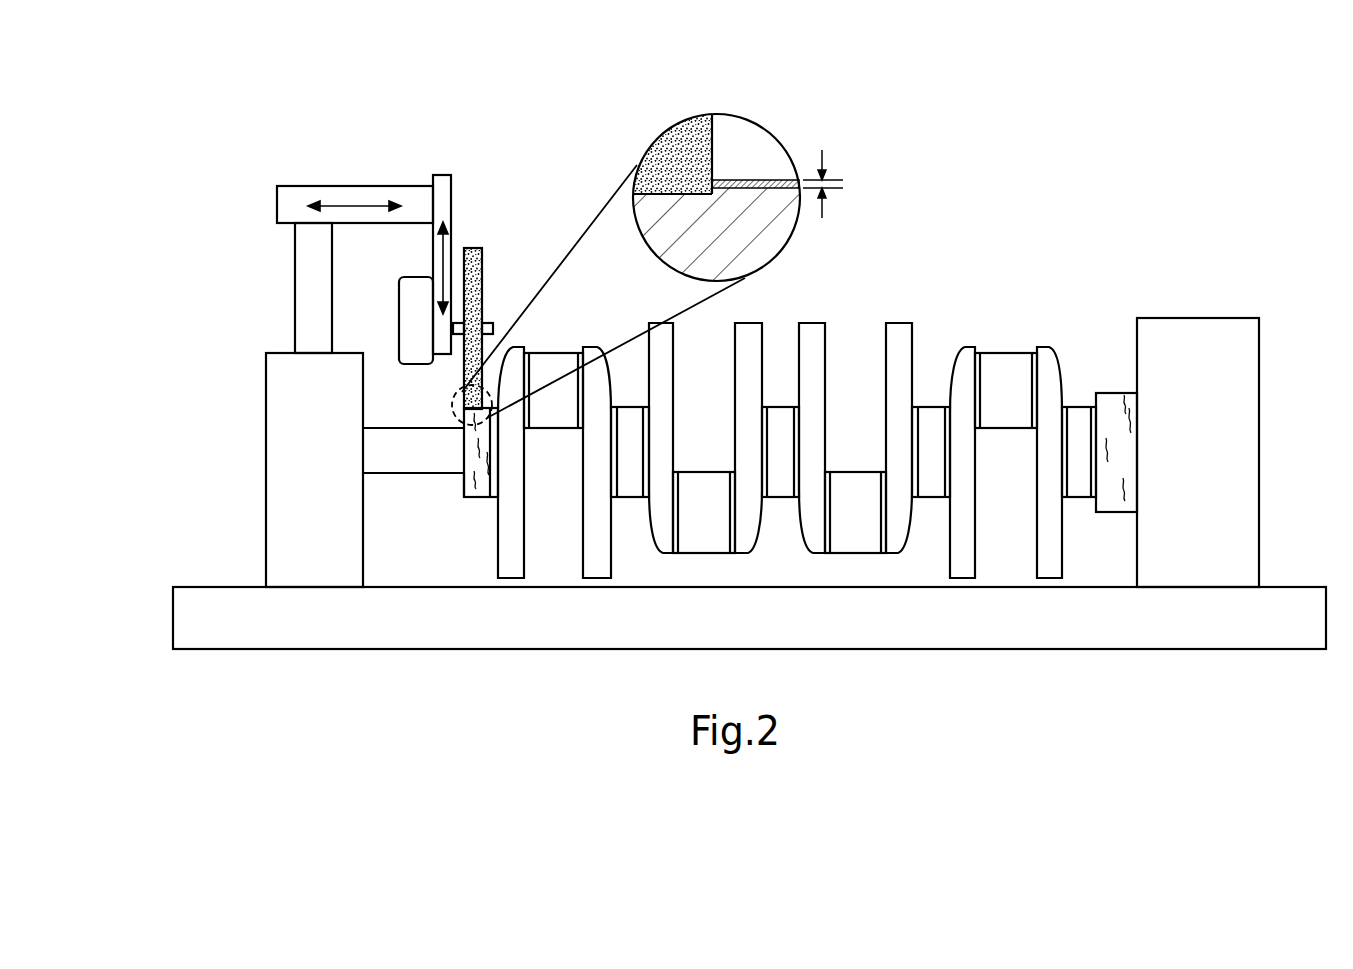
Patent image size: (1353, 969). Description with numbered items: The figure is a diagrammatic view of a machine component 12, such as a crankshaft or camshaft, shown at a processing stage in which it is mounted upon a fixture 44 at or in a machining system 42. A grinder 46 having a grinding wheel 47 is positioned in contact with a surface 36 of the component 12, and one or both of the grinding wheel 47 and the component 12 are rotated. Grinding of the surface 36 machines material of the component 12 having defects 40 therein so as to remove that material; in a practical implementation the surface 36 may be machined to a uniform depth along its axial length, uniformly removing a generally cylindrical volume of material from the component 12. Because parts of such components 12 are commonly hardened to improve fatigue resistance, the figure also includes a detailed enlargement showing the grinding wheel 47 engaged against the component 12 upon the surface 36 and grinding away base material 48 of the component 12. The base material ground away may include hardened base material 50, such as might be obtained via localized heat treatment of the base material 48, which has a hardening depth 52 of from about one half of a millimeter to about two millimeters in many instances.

The component 12 is at (761, 415).
The surface 36 is at (486, 494).
The defects 40 is at (460, 483).
The machining system 42 is at (220, 235).
The fixture 44 is at (266, 394).
The grinder 46 is at (472, 233).
The grinding wheel 47 is at (482, 261).
The base material 48 is at (652, 223).
The hardened base material 50 is at (785, 180).
The hardening depth 52 is at (843, 184).